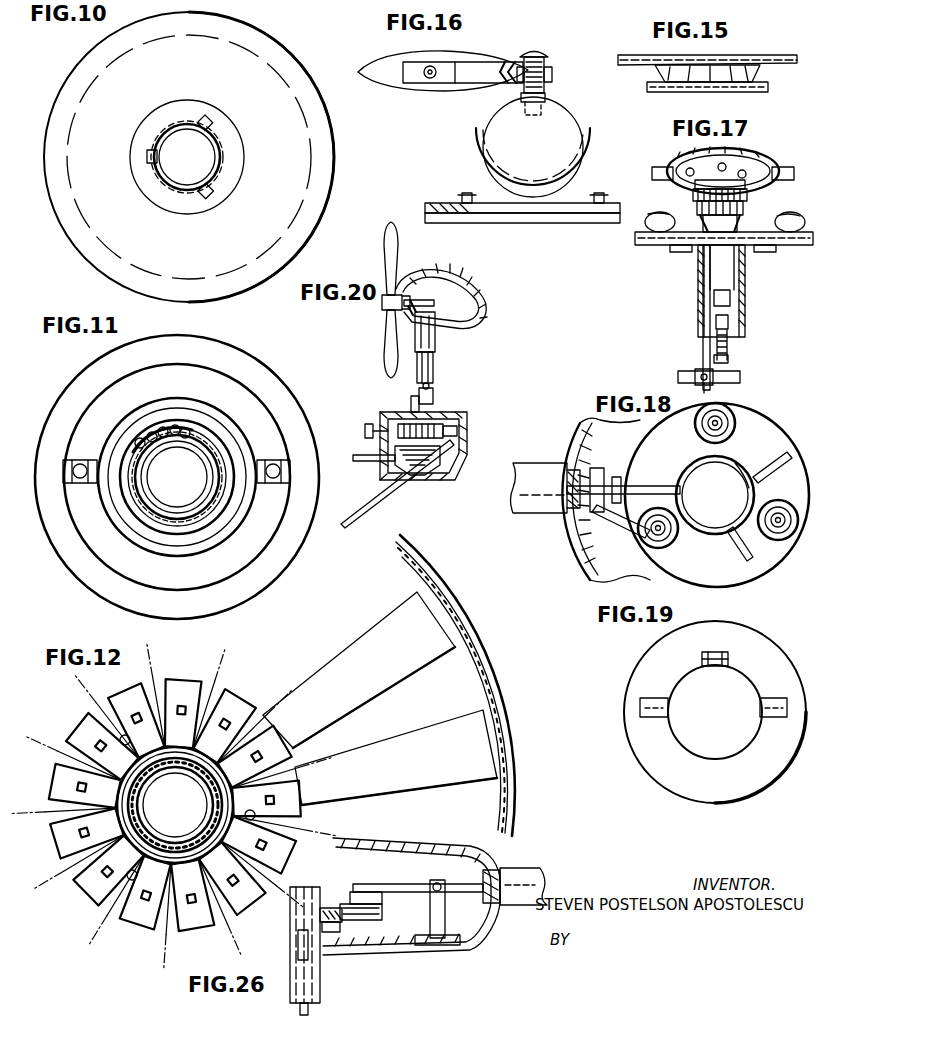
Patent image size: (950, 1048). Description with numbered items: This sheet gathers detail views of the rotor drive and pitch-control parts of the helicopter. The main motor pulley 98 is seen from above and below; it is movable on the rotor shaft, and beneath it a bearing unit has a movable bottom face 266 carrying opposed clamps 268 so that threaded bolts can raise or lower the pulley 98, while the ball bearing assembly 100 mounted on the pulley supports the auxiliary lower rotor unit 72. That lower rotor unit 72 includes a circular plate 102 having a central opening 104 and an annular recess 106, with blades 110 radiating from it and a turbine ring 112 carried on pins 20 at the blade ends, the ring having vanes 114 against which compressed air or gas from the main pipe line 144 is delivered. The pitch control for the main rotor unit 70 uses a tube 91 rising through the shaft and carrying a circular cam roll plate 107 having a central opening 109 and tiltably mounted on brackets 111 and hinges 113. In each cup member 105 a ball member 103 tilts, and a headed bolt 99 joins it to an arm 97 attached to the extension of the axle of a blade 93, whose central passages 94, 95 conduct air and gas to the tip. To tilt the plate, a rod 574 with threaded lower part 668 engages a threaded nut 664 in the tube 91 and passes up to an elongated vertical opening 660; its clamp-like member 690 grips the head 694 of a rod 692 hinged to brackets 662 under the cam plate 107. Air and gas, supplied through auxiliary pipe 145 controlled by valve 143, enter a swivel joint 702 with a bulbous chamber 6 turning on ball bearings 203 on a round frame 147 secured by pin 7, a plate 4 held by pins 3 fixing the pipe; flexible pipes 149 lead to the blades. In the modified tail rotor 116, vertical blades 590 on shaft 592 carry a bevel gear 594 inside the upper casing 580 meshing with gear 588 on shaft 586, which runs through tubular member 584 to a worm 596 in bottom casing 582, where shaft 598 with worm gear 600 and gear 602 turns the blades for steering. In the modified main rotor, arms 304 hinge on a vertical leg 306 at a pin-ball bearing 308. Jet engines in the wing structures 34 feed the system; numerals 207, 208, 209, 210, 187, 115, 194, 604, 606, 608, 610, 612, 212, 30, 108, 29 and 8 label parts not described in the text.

In FIG. 10, the pulley 98 is at (262, 45).
In FIG. 11, the pulley 98 is at (226, 350).
In FIG. 10, the central ring 207 is at (187, 157).
In FIG. 10, the locking tabs 208 is at (212, 124).
In FIG. 10, the bearing ring 209 is at (236, 146).
In FIG. 11, the bearing ring 209 is at (230, 434).
In FIG. 11, the bottom face 266 is at (138, 383).
In FIG. 11, the wing structure 34 is at (232, 393).
In FIG. 11, the ball bearing 210 is at (183, 432).
In FIG. 11, the clamp 268 is at (270, 463).
In FIG. 16, the blade 93 is at (456, 52).
In FIG. 18, the blade 93 is at (545, 463).
In FIG. 26, the blade 93 is at (530, 868).
In FIG. 16, the central passage 94 is at (438, 84).
In FIG. 18, the central passage 94 is at (580, 515).
In FIG. 26, the central passage 94 is at (495, 910).
In FIG. 16, the central passage 95 is at (410, 80).
In FIG. 18, the central passage 95 is at (598, 458).
In FIG. 26, the central passage 95 is at (508, 870).
In FIG. 16, the arm 97 is at (497, 62).
In FIG. 18, the arm 97 is at (605, 528).
In FIG. 16, the headed bolt 99 is at (545, 56).
In FIG. 18, the headed bolt 99 is at (665, 548).
In FIG. 26, the headed bolt 99 is at (368, 882).
In FIG. 16, the ball member 103 is at (570, 112).
In FIG. 17, the ball member 103 is at (796, 214).
In FIG. 18, the ball member 103 is at (650, 548).
In FIG. 26, the ball member 103 is at (362, 890).
In FIG. 16, the cup member 105 is at (592, 150).
In FIG. 17, the cup member 105 is at (640, 190).
In FIG. 18, the cup member 105 is at (700, 538).
In FIG. 26, the cup member 105 is at (382, 905).
In FIG. 16, the cam roll plate 107 is at (445, 203).
In FIG. 17, the cam roll plate 107 is at (660, 238).
In FIG. 18, the cam roll plate 107 is at (795, 472).
In FIG. 19, the cam roll plate 107 is at (780, 648).
In FIG. 26, the cam roll plate 107 is at (398, 948).
In FIG. 16, the base flange 187 is at (585, 203).
In FIG. 15, the upper disc 115 is at (775, 53).
In FIG. 15, the annular recess 106 is at (770, 88).
In FIG. 12, the annular recess 106 is at (238, 698).
In FIG. 17, the swivel joint 702 is at (758, 150).
In FIG. 18, the swivel joint 702 is at (728, 491).
In FIG. 17, the plate 4 is at (748, 152).
In FIG. 17, the bulbous chamber 6 is at (768, 158).
In FIG. 17, the pin 3 is at (716, 167).
In FIG. 17, the flexible pipe 149 is at (790, 167).
In FIG. 18, the flexible pipe 149 is at (650, 488).
In FIG. 17, the round frame 147 is at (770, 188).
In FIG. 17, the ball bearing 203 is at (698, 215).
In FIG. 17, the pin 7 is at (705, 223).
In FIG. 17, the hinge 113 is at (778, 247).
In FIG. 19, the hinge 113 is at (768, 700).
In FIG. 26, the hinge 113 is at (345, 928).
In FIG. 17, the bracket 111 is at (700, 267).
In FIG. 26, the bracket 111 is at (330, 938).
In FIG. 17, the tube 91 is at (732, 293).
In FIG. 26, the tube 91 is at (298, 958).
In FIG. 17, the bracket 662 is at (712, 293).
In FIG. 19, the bracket 662 is at (725, 653).
In FIG. 17, the head 694 is at (732, 291).
In FIG. 17, the clamp-like member 690 is at (730, 299).
In FIG. 17, the rod 692 is at (705, 297).
In FIG. 26, the rod 692 is at (312, 1008).
In FIG. 17, the threaded nut 664 is at (745, 319).
In FIG. 17, the lower part of rod 668 is at (728, 344).
In FIG. 17, the rod 574 is at (740, 365).
In FIG. 17, the auxiliary air and gas pipe 145 is at (700, 364).
In FIG. 17, the valve 143 is at (740, 381).
In FIG. 17, the main pipe line 144 is at (678, 378).
In FIG. 20, the blade 590 is at (385, 372).
In FIG. 20, the shaft 592 is at (407, 294).
In FIG. 20, the bevel gear 594 is at (430, 290).
In FIG. 20, the upper oblong hollow casing 580 is at (470, 280).
In FIG. 20, the gear 588 is at (470, 306).
In FIG. 20, the shaft 586 is at (435, 340).
In FIG. 20, the tubular member 584 is at (433, 368).
In FIG. 20, the coupling 194 is at (433, 394).
In FIG. 20, the worm gear 596 is at (419, 396).
In FIG. 20, the shaft 598 is at (410, 404).
In FIG. 20, the bottom casing 582 is at (462, 418).
In FIG. 20, the gear 602 is at (358, 431).
In FIG. 20, the worm gear 600 is at (460, 444).
In FIG. 20, the worm gear 604 is at (425, 476).
In FIG. 20, the gear shaft 606 is at (408, 478).
In FIG. 20, the gear housing wall 608 is at (450, 478).
In FIG. 20, the lever rod 610 is at (366, 462).
In FIG. 20, the control rod 612 is at (345, 528).
In FIG. 20, the tail rotor 116 is at (376, 323).
In FIG. 18, the central opening 109 is at (758, 487).
In FIG. 19, the central opening 109 is at (730, 660).
In FIG. 12, the ball bearing assembly 100 is at (172, 825).
In FIG. 12, the central opening 104 is at (60, 860).
In FIG. 12, the vane tab 212 is at (122, 735).
In FIG. 12, the vane 30 is at (198, 718).
In FIG. 12, the vane support 108 is at (282, 730).
In FIG. 12, the circular plate 102 is at (290, 758).
In FIG. 12, the tab 29 is at (205, 815).
In FIG. 12, the vane end 8 is at (285, 858).
In FIG. 12, the blade 110 is at (430, 738).
In FIG. 12, the pin 20 is at (485, 740).
In FIG. 12, the lower rotor unit 72 is at (514, 664).
In FIG. 12, the turbine ring 112 is at (532, 742).
In FIG. 12, the vane 114 is at (530, 775).
In FIG. 26, the pin-ball bearing 308 is at (460, 838).
In FIG. 26, the main rotor unit 70 is at (433, 840).
In FIG. 26, the arm 304 is at (435, 882).
In FIG. 26, the vertical leg 306 is at (428, 918).
In FIG. 26, the elongated vertical opening 660 is at (292, 936).